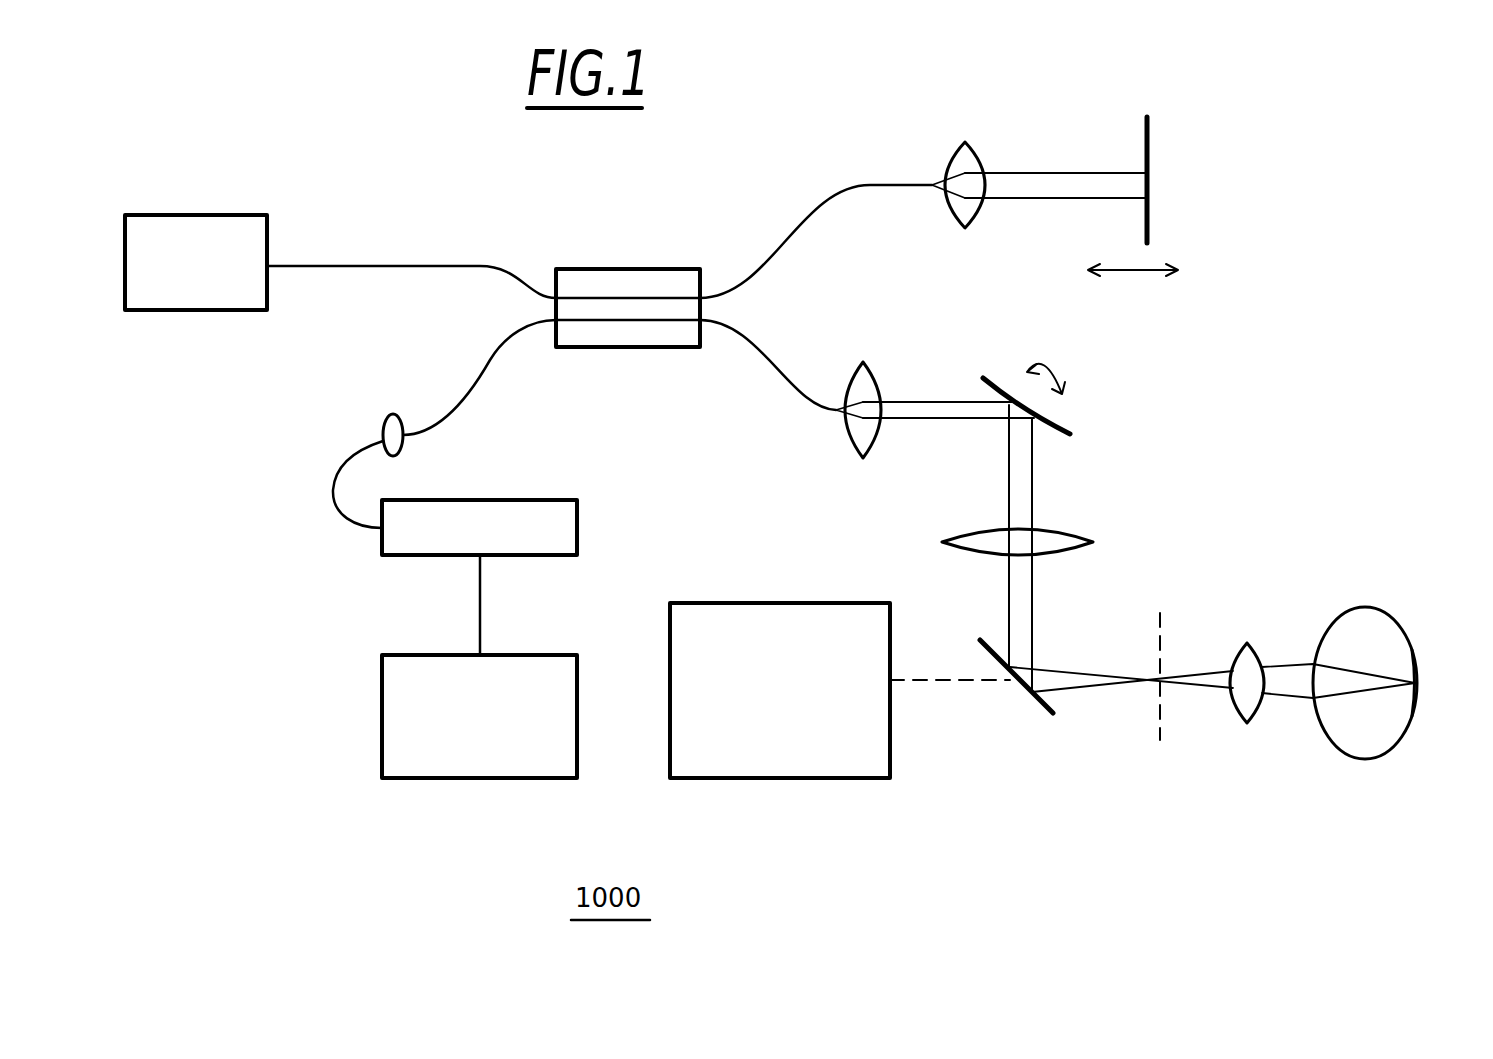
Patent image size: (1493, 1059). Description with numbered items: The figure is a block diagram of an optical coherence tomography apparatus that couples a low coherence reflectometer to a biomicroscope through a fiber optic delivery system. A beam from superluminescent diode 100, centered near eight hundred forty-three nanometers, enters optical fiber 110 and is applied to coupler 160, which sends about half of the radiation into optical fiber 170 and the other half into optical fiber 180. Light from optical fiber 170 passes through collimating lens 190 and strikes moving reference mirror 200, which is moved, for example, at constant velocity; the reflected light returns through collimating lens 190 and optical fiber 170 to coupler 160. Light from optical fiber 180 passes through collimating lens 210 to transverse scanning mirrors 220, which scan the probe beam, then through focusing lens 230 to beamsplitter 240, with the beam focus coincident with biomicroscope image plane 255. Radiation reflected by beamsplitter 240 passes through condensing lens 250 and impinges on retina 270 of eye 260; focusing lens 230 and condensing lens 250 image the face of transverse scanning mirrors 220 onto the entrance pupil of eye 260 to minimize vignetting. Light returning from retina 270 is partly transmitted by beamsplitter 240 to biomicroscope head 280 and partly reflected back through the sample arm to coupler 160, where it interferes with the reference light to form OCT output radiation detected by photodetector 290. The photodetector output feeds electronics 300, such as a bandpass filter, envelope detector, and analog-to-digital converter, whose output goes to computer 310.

The superluminescent diode 100 is at (200, 310).
The optical fiber 110 is at (378, 267).
The coupler 160 is at (617, 268).
The optical fiber 170 is at (783, 250).
The optical fiber 180 is at (772, 357).
The collimating lens 190 is at (976, 153).
The reference mirror 200 is at (1152, 137).
The collimating lens 210 is at (876, 376).
The transverse scanning mirrors 220 is at (1068, 430).
The focusing lens 230 is at (1078, 532).
The beamsplitter 240 is at (1047, 710).
The condensing lens 250 is at (1247, 641).
The biomicroscope image plane 255 is at (1160, 742).
The eye 260 is at (1360, 745).
The retina 270 is at (1413, 652).
The biomicroscope head 280 is at (795, 778).
The photodetector 290 is at (383, 437).
The electronics 300 is at (580, 525).
The computer 310 is at (485, 778).